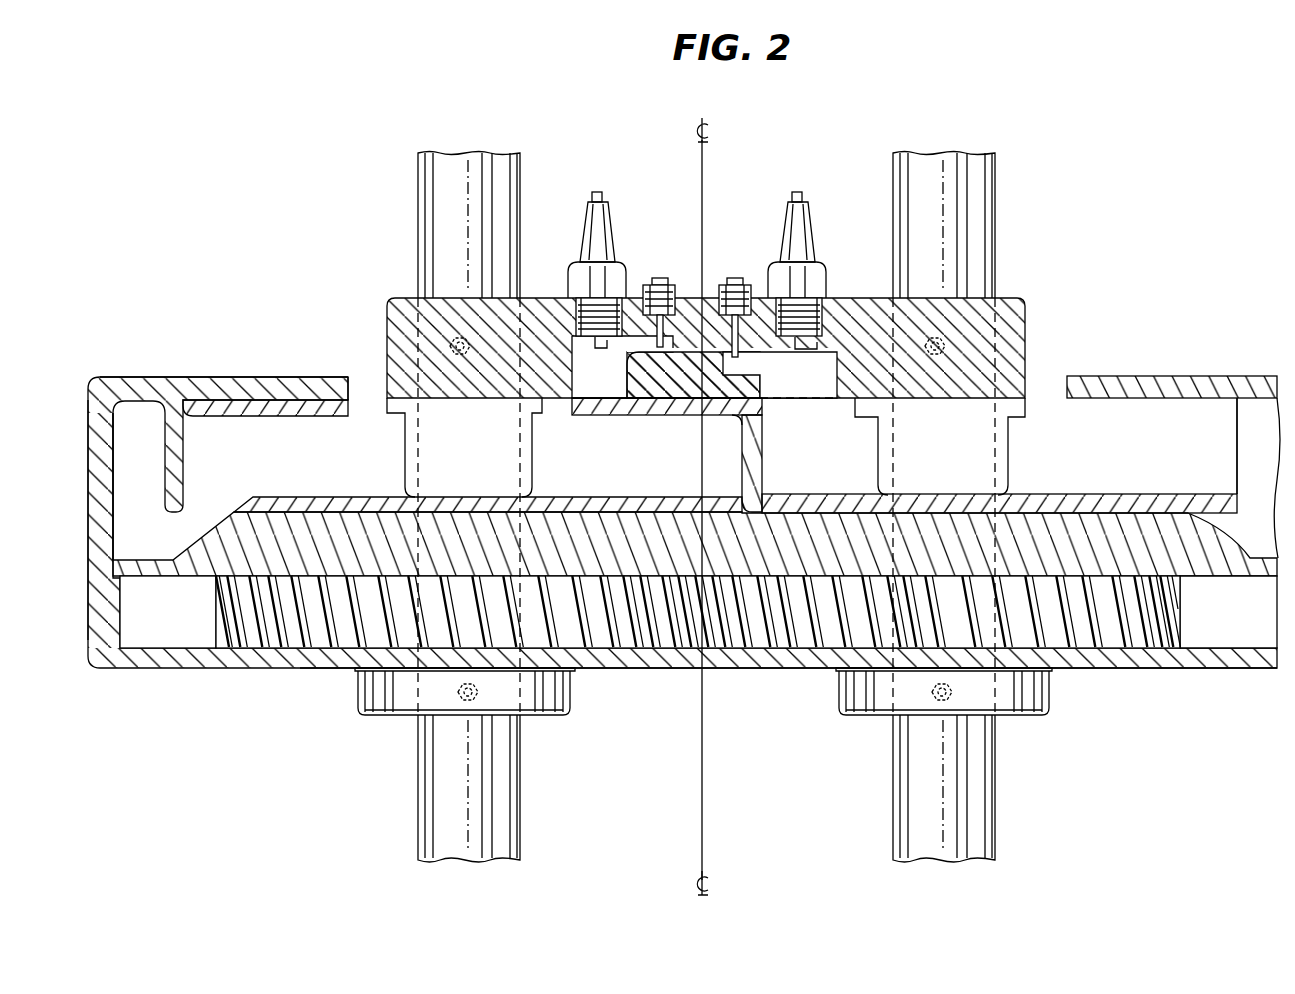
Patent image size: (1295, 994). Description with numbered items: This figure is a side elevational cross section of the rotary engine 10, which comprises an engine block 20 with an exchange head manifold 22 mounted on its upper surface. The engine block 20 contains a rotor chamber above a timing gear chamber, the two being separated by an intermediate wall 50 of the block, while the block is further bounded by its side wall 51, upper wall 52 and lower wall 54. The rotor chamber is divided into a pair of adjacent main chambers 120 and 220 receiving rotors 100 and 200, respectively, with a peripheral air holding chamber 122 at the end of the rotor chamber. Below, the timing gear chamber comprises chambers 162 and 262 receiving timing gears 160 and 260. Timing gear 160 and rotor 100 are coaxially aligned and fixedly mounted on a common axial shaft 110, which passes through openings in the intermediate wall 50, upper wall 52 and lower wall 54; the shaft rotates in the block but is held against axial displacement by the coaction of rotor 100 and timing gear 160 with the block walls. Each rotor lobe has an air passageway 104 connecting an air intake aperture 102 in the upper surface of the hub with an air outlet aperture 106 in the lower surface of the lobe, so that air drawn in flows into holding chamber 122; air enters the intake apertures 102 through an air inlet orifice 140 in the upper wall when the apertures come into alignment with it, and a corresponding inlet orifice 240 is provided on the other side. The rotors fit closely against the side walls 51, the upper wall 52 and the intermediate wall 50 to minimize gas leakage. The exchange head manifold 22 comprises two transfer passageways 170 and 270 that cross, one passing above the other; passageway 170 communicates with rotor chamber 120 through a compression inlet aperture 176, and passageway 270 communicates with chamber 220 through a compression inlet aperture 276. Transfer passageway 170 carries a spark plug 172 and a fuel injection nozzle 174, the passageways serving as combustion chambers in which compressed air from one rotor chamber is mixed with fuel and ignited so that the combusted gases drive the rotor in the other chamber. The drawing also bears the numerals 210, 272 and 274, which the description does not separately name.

The rotary engine 10 is at (280, 200).
The engine block 20 is at (99, 372).
The exchange head manifold 22 is at (538, 298).
The intermediate wall 50 is at (332, 535).
The wall 51 is at (86, 430).
The upper wall 52 is at (175, 378).
The lower wall 54 is at (646, 670).
The rotor 100 is at (250, 417).
The air intake aperture 102 is at (388, 418).
The air passageway 104 is at (281, 452).
The air outlet aperture 106 is at (723, 497).
The common axial shaft 110 is at (516, 760).
The main chamber 120 is at (617, 470).
The peripheral air holding chamber 122 is at (122, 509).
The air inlet orifice 140 is at (363, 385).
The timing gear 160 is at (255, 635).
The chamber 162 is at (165, 632).
The transfer passageway 170 is at (625, 330).
The spark plug 172 is at (612, 228).
The fuel injection nozzle 174 is at (662, 292).
The compression inlet aperture 176 is at (613, 395).
The rotor 200 is at (1050, 495).
The conduit 210 is at (893, 770).
The main chamber 220 is at (1160, 452).
The air inlet orifice 240 is at (1046, 392).
The timing gear 260 is at (1075, 650).
The chamber 262 is at (1220, 632).
The transfer passageway 270 is at (690, 338).
The terminal insulator 272 is at (812, 228).
The terminal nut 274 is at (740, 290).
The compression inlet aperture 276 is at (828, 395).